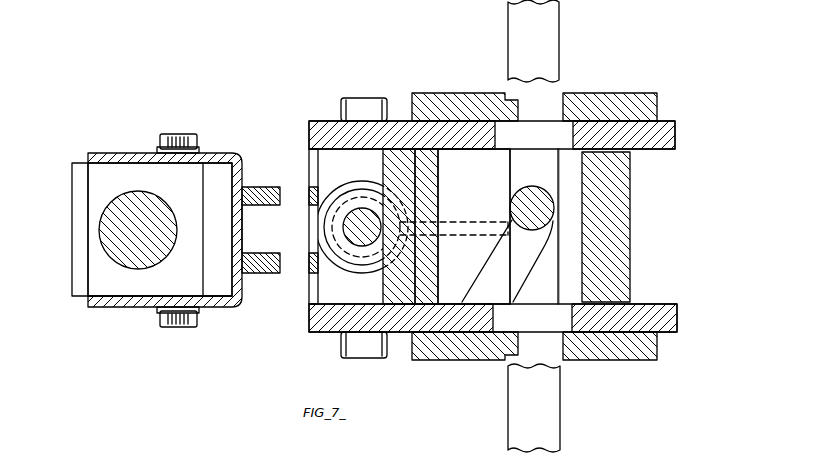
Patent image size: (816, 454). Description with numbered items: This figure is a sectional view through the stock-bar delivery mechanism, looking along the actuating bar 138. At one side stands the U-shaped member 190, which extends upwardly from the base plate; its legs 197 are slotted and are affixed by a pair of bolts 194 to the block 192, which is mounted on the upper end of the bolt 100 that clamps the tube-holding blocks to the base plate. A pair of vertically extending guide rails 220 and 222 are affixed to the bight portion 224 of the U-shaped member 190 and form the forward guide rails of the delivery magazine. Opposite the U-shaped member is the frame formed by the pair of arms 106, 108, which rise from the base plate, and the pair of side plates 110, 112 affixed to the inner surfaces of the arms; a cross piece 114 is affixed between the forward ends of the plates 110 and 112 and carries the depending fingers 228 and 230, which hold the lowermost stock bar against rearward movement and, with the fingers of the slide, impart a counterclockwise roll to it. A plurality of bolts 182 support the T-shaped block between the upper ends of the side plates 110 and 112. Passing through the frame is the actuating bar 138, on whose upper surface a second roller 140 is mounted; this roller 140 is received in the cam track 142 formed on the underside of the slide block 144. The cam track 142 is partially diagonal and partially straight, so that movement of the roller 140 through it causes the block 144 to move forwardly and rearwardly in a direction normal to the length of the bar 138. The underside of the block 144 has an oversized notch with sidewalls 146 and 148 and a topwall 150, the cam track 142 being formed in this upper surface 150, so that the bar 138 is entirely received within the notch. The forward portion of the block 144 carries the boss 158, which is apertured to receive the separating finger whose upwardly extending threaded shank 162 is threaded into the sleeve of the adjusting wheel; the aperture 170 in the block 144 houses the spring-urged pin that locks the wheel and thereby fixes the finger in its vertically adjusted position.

The bolt 100 is at (122, 194).
The arm 106 is at (452, 361).
The arm 108 is at (622, 361).
The plate 110 is at (676, 140).
The plate 112 is at (678, 319).
The cross piece 114 is at (312, 175).
The actuating bar 138 is at (559, 38).
The second roller 140 is at (536, 231).
The cam track 142 is at (480, 277).
The slide block 144 is at (631, 239).
The sidewall 146 is at (438, 272).
The sidewall 148 is at (582, 262).
The topwall 150 is at (474, 226).
The boss 158 is at (356, 273).
The threaded shank 162 is at (364, 190).
The aperture 170 is at (458, 222).
The bolt 182 is at (355, 359).
The U-shaped member 190 is at (95, 312).
The block 192 is at (160, 229).
The bolt 194 is at (181, 132).
The leg 197 is at (137, 308).
The guide rail 220 is at (249, 187).
The guide rail 222 is at (250, 274).
The bight portion 224 is at (243, 228).
The depending finger 228 is at (311, 200).
The depending finger 230 is at (311, 266).